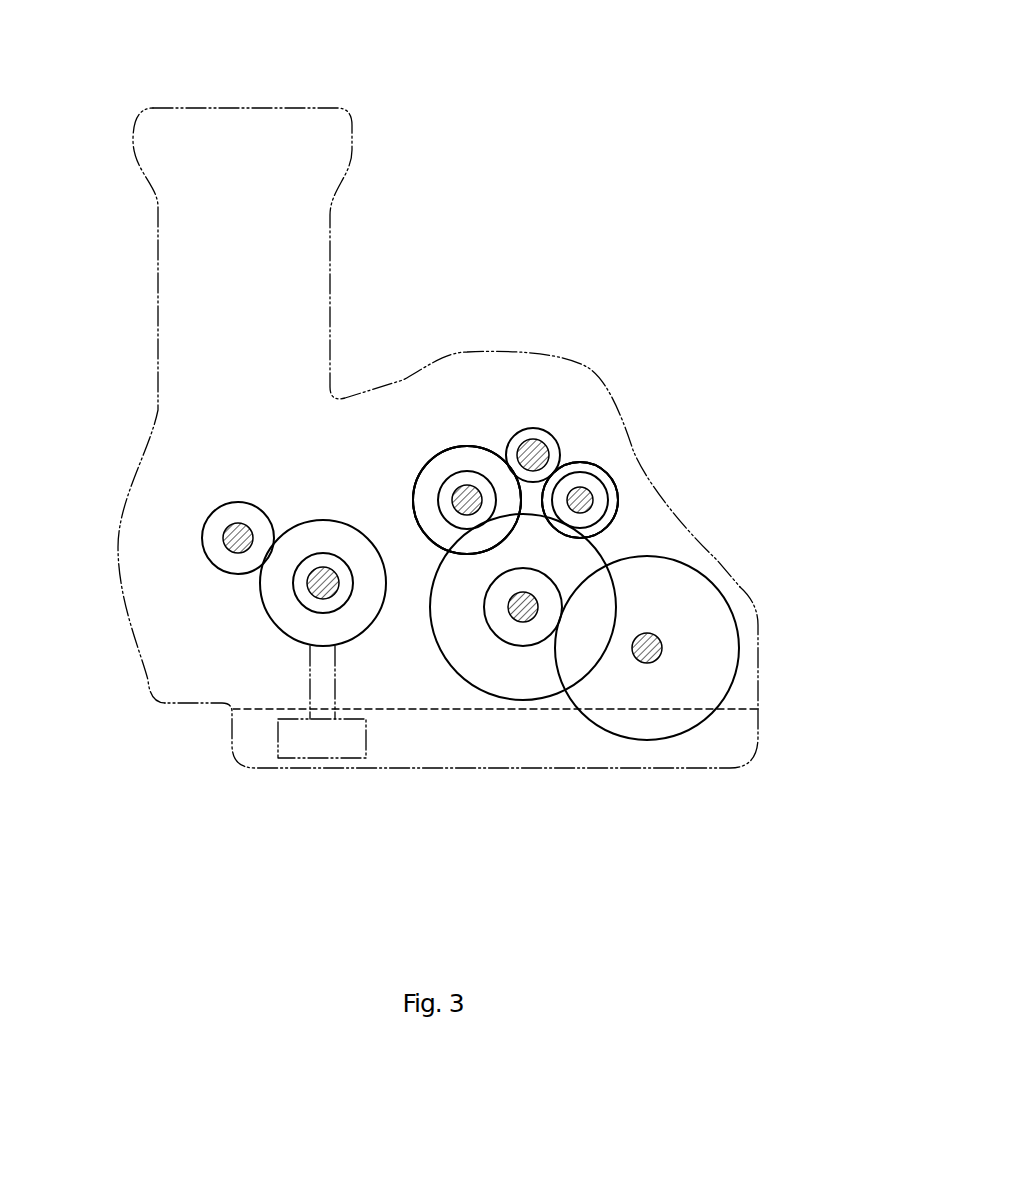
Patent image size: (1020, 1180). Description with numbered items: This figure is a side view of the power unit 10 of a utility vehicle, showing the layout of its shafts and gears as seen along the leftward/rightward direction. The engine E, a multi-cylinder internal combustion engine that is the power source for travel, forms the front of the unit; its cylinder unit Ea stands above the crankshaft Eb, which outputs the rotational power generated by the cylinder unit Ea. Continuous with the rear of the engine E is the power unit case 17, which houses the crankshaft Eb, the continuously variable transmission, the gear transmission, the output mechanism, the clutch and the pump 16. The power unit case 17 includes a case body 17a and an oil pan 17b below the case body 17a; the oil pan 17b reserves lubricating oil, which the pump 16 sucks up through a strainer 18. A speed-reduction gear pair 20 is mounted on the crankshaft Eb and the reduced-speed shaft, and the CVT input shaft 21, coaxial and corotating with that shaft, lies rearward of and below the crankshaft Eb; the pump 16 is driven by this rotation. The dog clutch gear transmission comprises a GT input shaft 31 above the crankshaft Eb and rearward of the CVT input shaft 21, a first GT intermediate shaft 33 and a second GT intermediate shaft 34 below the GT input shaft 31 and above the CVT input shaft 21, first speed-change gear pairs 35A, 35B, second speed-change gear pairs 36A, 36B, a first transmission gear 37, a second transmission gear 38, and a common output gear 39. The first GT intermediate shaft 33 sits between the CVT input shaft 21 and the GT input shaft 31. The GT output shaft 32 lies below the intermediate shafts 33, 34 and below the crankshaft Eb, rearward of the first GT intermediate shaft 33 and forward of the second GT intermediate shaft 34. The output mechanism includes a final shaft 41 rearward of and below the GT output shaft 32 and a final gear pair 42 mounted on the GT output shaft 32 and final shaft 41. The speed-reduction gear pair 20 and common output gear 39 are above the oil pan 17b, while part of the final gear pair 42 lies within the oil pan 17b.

The engine E is at (290, 106).
The cylinder unit Ea is at (158, 278).
The crankshaft Eb is at (240, 524).
The power unit 10 is at (536, 140).
The pump 16 is at (327, 553).
The power unit case 17 is at (850, 650).
The case body 17a is at (758, 658).
The oil pan 17b is at (758, 737).
The strainer 18 is at (318, 748).
The speed-reduction gear pair 20 is at (262, 590).
The CVT input shaft 21 is at (310, 598).
The GT input shaft 31 is at (528, 440).
The GT output shaft 32 is at (528, 620).
The first GT intermediate shaft 33 is at (457, 488).
The second GT intermediate shaft 34 is at (598, 507).
The first speed-change gear pair 35A is at (468, 447).
The first speed-change gear pair 35B is at (467, 500).
The second speed-change gear pair 36A is at (588, 488).
The second speed-change gear pair 36B is at (580, 500).
The first transmission gear 37 is at (413, 521).
The second transmission gear 38 is at (620, 520).
The common output gear 39 is at (435, 638).
The final shaft 41 is at (654, 664).
The final gear pair 42 is at (605, 732).